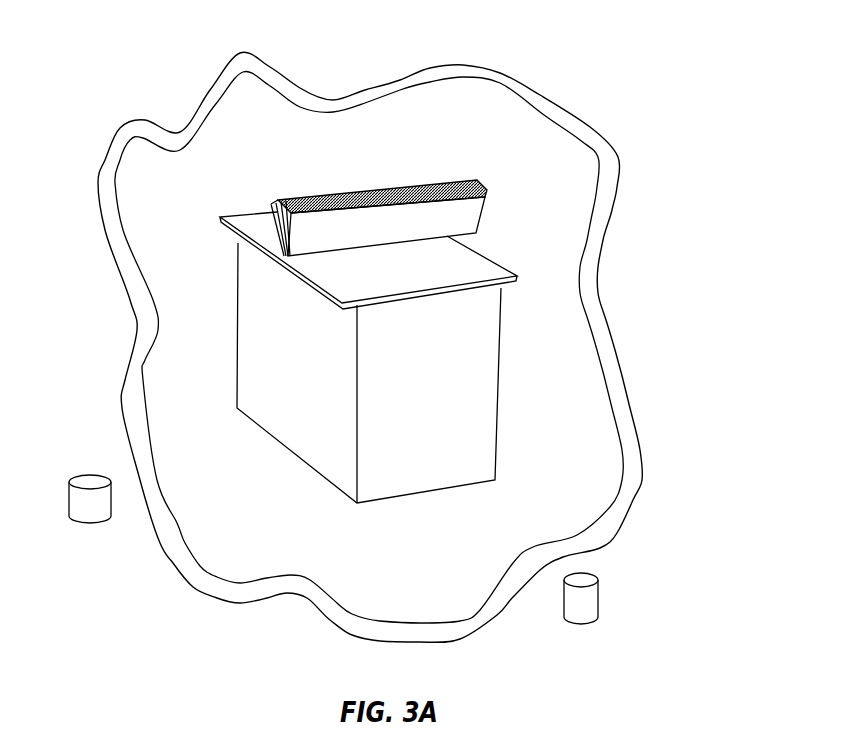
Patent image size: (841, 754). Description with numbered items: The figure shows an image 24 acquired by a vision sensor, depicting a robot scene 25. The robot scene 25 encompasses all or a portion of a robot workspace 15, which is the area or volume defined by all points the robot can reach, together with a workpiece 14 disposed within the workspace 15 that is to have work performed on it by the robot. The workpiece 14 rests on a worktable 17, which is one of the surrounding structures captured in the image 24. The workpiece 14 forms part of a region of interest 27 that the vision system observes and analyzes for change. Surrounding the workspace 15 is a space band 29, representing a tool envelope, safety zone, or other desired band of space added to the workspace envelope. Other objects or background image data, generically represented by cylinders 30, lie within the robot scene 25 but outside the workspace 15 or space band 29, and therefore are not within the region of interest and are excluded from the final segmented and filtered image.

The workpiece 14 is at (385, 183).
The workspace 15 is at (162, 541).
The worktable 17 is at (497, 463).
The image 24 is at (168, 78).
The robot scene 25 is at (657, 100).
The region of interest 27 is at (523, 208).
The space band 29 is at (188, 579).
The cylinders 30 is at (82, 475).